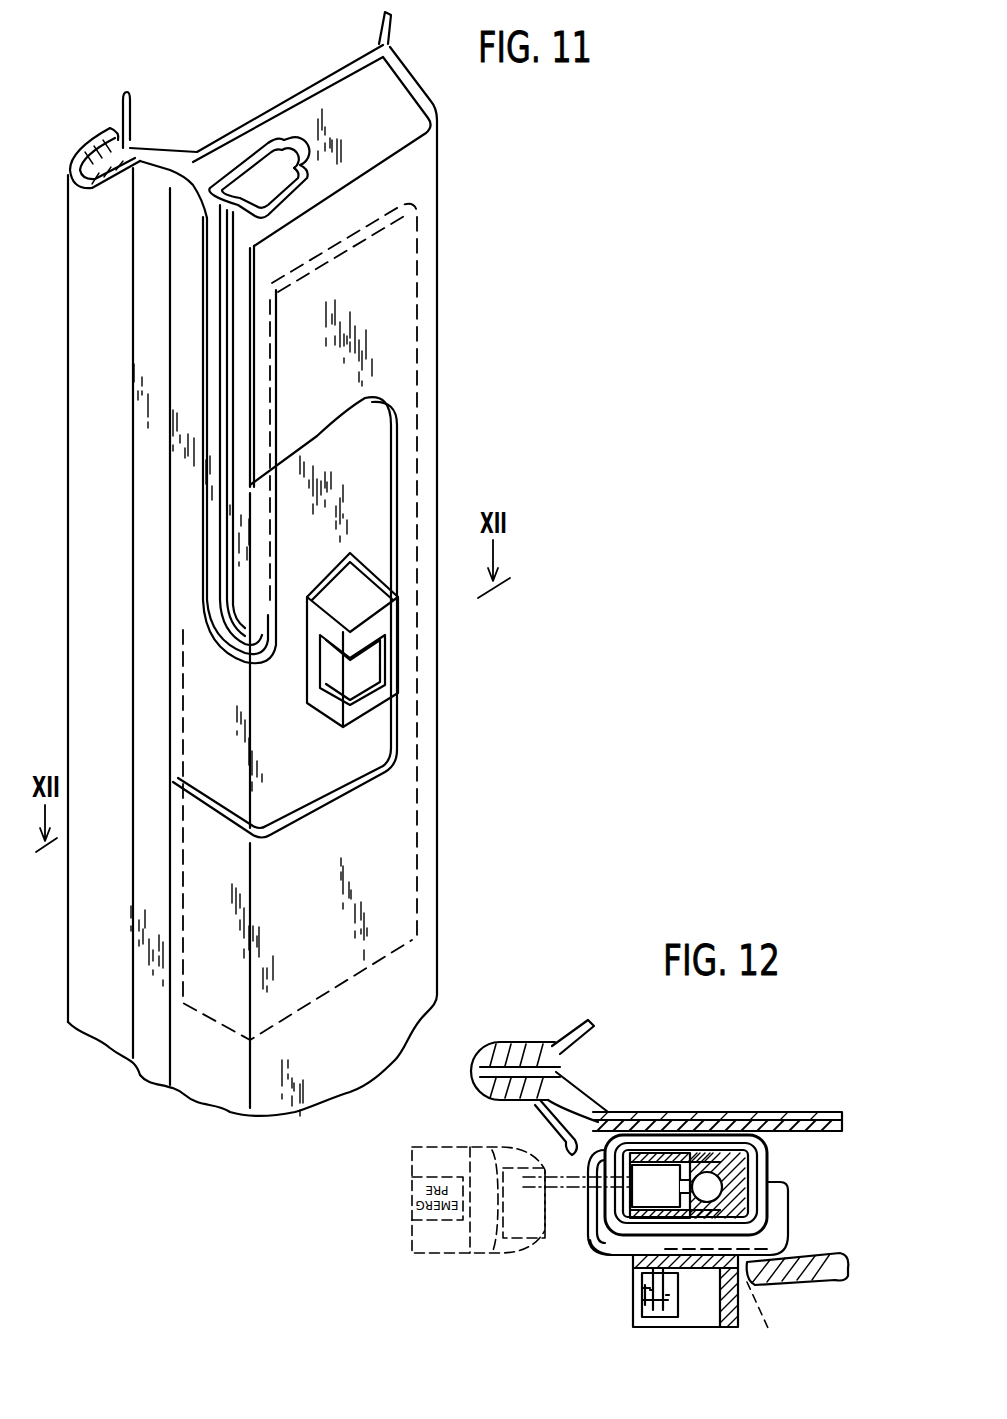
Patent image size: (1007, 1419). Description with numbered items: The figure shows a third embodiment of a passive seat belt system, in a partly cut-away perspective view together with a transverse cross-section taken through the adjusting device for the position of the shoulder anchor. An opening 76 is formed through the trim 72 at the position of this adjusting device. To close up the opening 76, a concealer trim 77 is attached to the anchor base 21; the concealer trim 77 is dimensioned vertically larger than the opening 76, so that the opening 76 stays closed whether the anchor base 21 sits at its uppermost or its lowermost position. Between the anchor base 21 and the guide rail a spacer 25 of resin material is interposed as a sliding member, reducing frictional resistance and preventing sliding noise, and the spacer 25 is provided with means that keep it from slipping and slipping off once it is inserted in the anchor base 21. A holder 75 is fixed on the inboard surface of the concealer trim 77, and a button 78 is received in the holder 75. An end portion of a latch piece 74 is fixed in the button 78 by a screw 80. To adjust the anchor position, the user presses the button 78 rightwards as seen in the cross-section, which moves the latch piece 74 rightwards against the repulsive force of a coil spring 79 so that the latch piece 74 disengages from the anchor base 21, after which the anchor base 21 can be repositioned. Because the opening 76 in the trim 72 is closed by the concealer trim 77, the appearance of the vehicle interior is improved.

In FIG. 11, the anchor base 21 is at (220, 650).
In FIG. 12, the anchor base 21 is at (621, 1118).
In FIG. 11, the spacer 25 is at (230, 642).
In FIG. 12, the spacer 25 is at (658, 1152).
In FIG. 11, the trim 72 is at (430, 167).
In FIG. 12, the trim 72 is at (807, 1278).
In FIG. 12, the latch piece 74 is at (788, 1210).
In FIG. 11, the holder 75 is at (388, 618).
In FIG. 12, the holder 75 is at (735, 1327).
In FIG. 11, the opening 76 is at (373, 442).
In FIG. 12, the opening 76 is at (748, 1275).
In FIG. 11, the concealer trim 77 is at (308, 768).
In FIG. 12, the concealer trim 77 is at (613, 1245).
In FIG. 11, the button 78 is at (370, 677).
In FIG. 12, the button 78 is at (667, 1317).
In FIG. 12, the coil spring 79 is at (770, 1323).
In FIG. 12, the screw 80 is at (642, 1300).